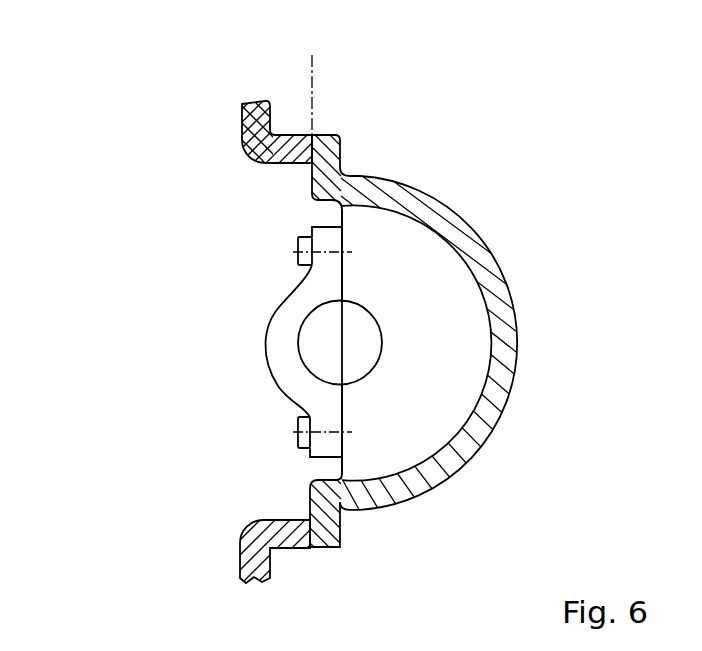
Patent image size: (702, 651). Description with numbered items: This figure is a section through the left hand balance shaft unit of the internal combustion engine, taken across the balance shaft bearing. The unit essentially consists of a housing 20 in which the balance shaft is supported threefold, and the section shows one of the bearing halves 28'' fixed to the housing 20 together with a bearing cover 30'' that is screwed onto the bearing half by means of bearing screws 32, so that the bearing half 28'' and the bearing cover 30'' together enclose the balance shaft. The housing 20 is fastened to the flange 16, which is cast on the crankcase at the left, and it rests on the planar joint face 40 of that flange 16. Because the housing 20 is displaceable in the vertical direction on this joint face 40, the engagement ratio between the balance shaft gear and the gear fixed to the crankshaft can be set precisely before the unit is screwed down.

The flange 16 is at (277, 146).
The housing 20 is at (377, 193).
The bearing half fixed to the housing 28'' is at (496, 272).
The bearing cover 30'' is at (205, 358).
The bearing screws 32 is at (302, 428).
The planar joint face 40 is at (334, 99).